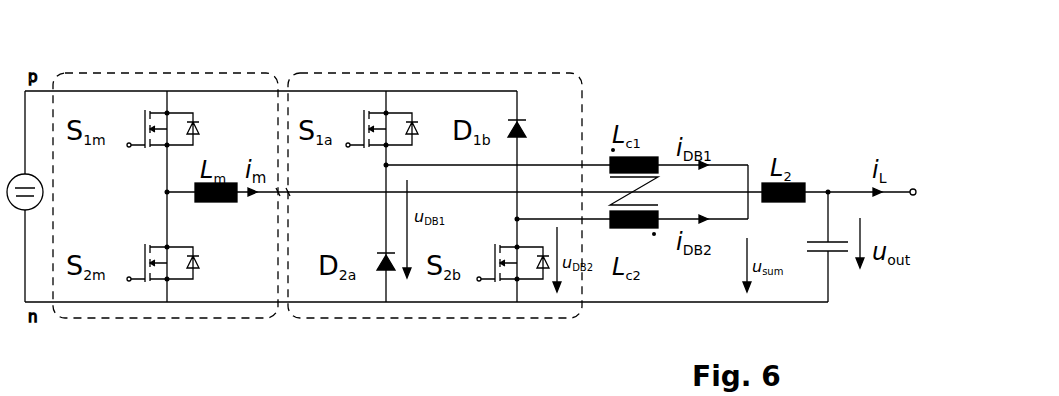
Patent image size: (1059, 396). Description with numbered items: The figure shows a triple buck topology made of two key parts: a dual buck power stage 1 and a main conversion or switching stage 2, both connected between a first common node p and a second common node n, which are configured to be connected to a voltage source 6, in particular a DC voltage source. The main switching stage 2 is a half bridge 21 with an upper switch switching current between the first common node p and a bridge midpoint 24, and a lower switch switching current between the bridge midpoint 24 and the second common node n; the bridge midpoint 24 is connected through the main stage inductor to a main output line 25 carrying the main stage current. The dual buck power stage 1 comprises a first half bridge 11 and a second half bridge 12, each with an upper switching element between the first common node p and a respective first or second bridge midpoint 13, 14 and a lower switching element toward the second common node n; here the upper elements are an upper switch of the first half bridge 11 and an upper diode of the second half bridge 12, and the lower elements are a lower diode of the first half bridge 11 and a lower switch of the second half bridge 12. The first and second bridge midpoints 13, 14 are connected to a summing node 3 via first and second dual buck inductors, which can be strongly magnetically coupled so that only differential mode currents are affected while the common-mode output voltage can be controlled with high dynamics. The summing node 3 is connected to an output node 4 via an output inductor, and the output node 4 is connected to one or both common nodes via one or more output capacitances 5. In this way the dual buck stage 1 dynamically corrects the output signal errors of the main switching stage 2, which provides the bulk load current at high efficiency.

The dual buck power stage 1 is at (548, 73).
The main conversion or switching stage 2 is at (250, 74).
The summing node 3 is at (750, 180).
The output node 4 is at (828, 180).
The output capacitance 5 is at (832, 258).
The voltage source 6 is at (31, 182).
The first half bridge 11 is at (382, 66).
The second half bridge 12 is at (507, 66).
The first bridge midpoint 13 is at (372, 168).
The second bridge midpoint 14 is at (503, 221).
The half bridge 21 is at (166, 66).
The bridge midpoint 24 is at (185, 192).
The main output line 25 is at (256, 200).